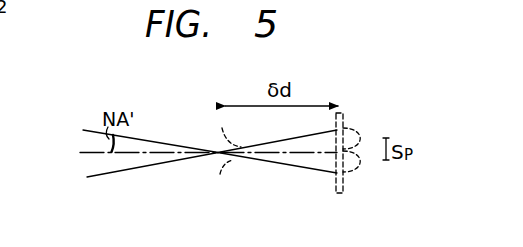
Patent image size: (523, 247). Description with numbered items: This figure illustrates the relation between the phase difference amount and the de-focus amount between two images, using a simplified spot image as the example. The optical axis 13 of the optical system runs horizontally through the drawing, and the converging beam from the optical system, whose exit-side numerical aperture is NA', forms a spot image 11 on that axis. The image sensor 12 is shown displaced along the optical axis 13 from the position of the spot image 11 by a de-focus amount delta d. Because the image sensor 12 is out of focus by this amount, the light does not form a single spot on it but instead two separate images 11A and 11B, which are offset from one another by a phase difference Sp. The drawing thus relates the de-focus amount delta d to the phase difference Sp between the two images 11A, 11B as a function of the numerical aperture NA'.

The spot image 11 is at (237, 158).
The first image 11A is at (357, 163).
The second image 11B is at (352, 128).
The image sensor 12 is at (346, 186).
The optical axis 13 is at (84, 156).